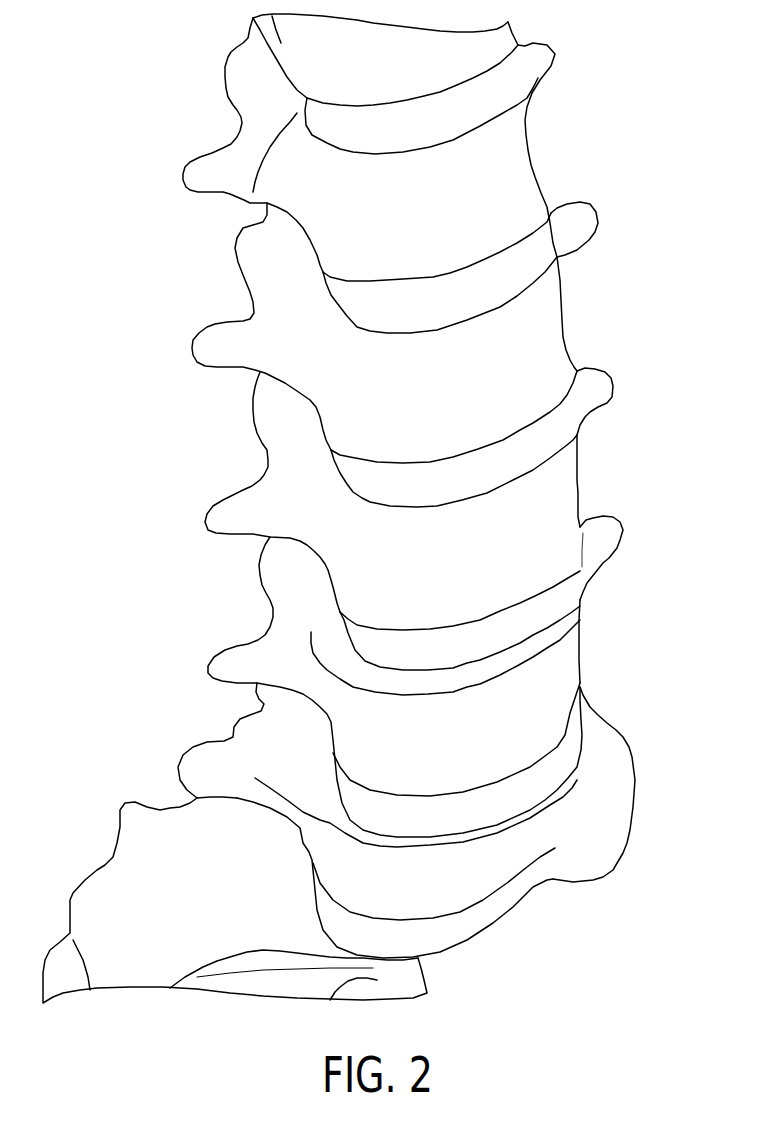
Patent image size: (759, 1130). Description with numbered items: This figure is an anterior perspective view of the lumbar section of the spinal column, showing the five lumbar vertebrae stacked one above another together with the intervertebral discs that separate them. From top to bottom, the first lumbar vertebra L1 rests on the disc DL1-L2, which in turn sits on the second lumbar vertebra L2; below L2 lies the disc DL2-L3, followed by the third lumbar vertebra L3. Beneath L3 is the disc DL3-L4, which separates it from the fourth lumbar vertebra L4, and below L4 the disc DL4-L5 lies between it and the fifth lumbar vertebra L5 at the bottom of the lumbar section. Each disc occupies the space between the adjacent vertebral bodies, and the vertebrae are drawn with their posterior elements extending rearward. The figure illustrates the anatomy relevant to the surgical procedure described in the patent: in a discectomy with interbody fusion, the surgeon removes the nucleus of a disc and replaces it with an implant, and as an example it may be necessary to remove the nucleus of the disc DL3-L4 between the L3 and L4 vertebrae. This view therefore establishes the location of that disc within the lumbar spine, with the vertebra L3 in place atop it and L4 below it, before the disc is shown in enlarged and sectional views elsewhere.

The lumbar vertebra L1 is at (513, 155).
The disc DL1-L2 is at (530, 260).
The lumbar vertebra L2 is at (550, 340).
The disc DL2-L3 is at (562, 436).
The lumbar vertebra L3 is at (563, 502).
The disc DL3-L4 is at (560, 603).
The lumbar vertebra L4 is at (570, 685).
The disc DL4-L5 is at (560, 755).
The lumbar vertebra L5 is at (520, 850).